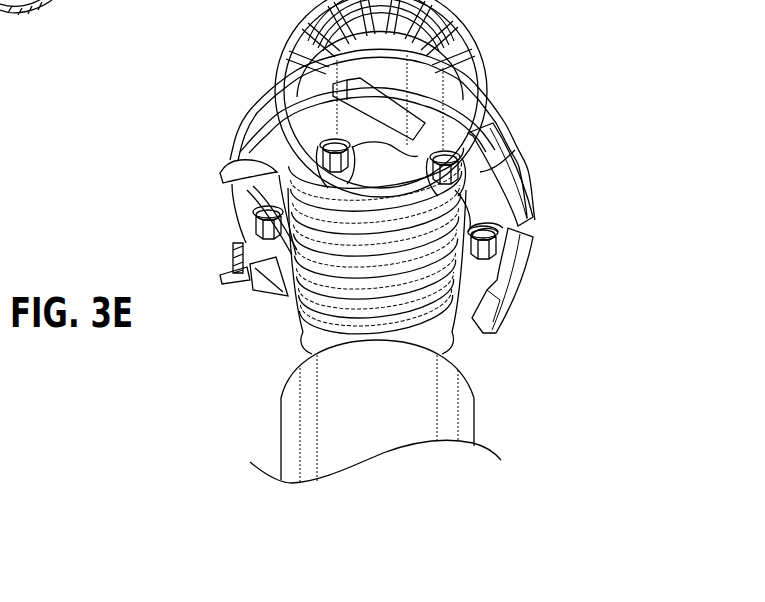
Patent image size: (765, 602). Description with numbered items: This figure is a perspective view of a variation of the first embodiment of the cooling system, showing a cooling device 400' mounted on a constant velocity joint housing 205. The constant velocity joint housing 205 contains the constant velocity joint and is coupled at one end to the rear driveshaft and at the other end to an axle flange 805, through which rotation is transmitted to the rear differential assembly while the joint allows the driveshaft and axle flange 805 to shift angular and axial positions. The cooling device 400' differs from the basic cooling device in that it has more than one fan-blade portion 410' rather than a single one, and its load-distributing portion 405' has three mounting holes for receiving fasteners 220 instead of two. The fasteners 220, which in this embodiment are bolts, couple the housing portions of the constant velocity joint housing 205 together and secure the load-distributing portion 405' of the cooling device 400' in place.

The axle flange 805 is at (278, 100).
The fan-blade portion 410' is at (423, 98).
The cooling device 400' is at (421, 271).
The load-distributing portion 405' is at (531, 174).
The fastener 220 is at (244, 229).
The constant velocity joint housing 205 is at (542, 228).